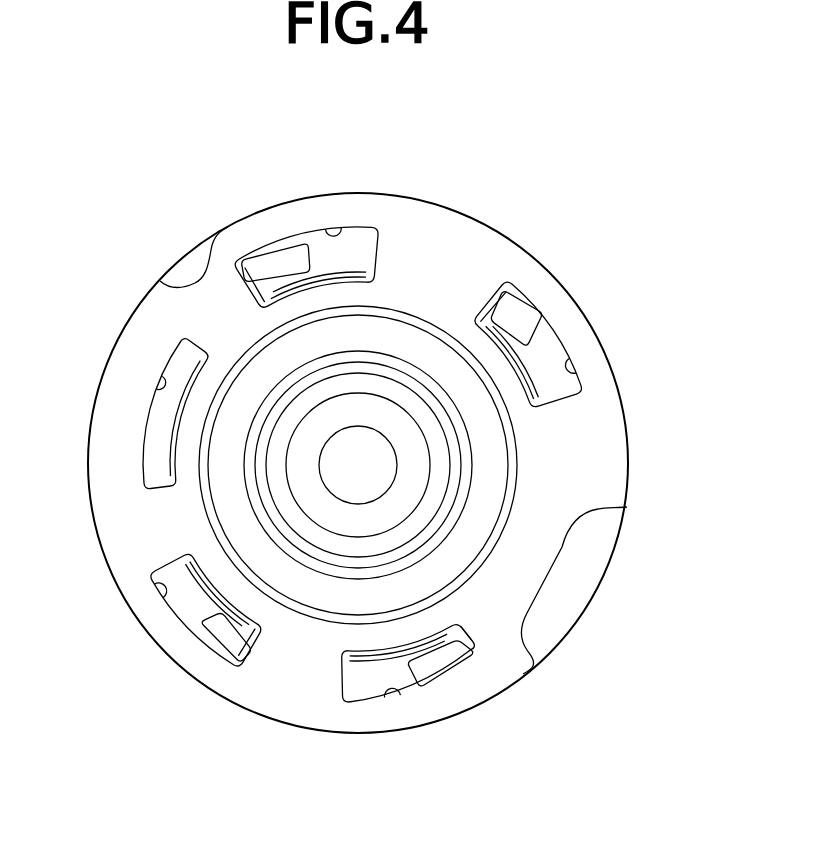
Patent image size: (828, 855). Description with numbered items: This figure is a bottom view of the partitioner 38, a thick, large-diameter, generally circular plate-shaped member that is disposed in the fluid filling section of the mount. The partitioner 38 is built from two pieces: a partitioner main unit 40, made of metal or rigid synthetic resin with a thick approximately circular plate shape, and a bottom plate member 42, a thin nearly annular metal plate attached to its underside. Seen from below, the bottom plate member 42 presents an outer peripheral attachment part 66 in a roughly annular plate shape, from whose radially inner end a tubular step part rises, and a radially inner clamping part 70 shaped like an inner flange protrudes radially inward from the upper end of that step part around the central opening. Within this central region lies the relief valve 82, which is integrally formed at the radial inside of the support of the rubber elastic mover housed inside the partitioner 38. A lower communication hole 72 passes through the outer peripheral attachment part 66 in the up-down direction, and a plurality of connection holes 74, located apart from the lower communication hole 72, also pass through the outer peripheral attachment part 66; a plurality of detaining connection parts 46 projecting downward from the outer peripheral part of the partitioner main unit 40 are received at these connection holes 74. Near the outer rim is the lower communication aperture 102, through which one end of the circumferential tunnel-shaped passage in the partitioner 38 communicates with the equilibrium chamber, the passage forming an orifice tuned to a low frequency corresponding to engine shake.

The partitioner 38 is at (645, 290).
The partitioner main unit 40 is at (196, 263).
The bottom plate member 42 is at (128, 531).
The detaining connection parts 46 is at (286, 254).
The outer peripheral attachment part 66 is at (448, 250).
The radially inner clamping part 70 is at (478, 518).
The lower communication hole 72 is at (158, 396).
The connection holes 74 is at (336, 228).
The relief valve 82 is at (443, 460).
The lower communication aperture 102 is at (550, 650).